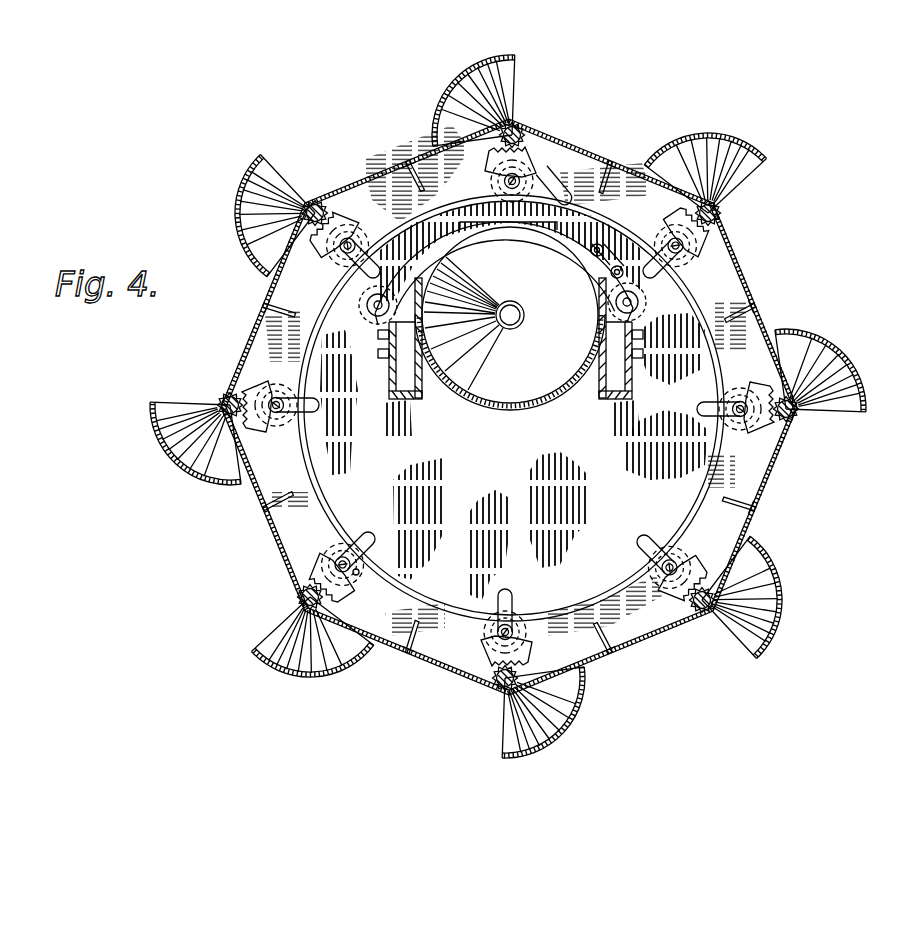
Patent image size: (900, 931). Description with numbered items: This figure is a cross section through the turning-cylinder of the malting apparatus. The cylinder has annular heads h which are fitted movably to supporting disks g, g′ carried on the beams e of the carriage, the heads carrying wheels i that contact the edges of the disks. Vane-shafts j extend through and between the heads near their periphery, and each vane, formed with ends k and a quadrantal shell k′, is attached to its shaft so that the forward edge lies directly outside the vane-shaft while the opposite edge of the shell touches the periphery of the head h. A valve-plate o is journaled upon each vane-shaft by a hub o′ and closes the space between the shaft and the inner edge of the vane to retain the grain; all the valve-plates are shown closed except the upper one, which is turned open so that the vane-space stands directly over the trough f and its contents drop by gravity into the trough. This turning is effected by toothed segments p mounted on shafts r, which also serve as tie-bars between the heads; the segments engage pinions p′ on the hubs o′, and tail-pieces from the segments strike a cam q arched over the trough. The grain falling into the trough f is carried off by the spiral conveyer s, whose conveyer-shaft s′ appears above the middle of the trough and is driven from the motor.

The valve-plate o is at (532, 98).
The hub o′ is at (710, 203).
The annular head h is at (748, 318).
The disk g is at (323, 510).
The disk g′ is at (690, 293).
The vane-shaft j is at (722, 213).
The toothed segment p is at (534, 160).
The tie-bar r is at (505, 184).
The pinion p′ is at (527, 132).
The wheel i is at (358, 573).
The quadrantal shell k′ is at (470, 95).
The vane end k is at (748, 178).
The tie-bar or beam e is at (389, 377).
The cam q is at (555, 222).
The conveyer-shaft s′ is at (512, 316).
The conveyer s is at (560, 383).
The trough f is at (532, 403).